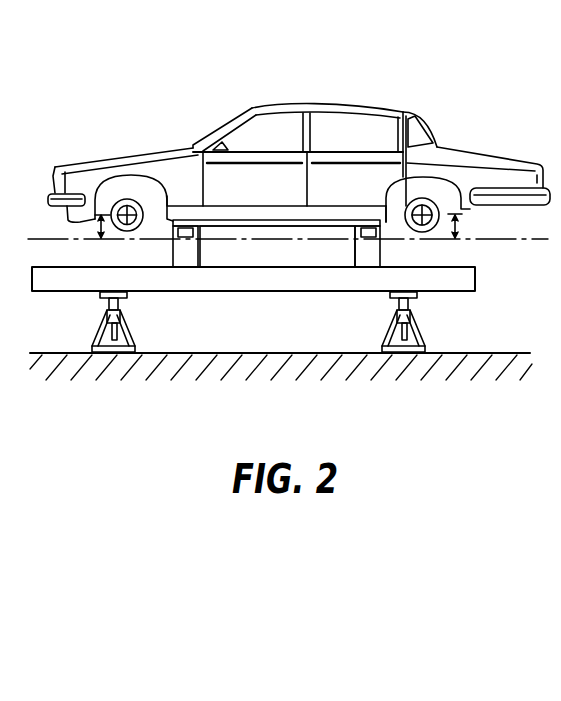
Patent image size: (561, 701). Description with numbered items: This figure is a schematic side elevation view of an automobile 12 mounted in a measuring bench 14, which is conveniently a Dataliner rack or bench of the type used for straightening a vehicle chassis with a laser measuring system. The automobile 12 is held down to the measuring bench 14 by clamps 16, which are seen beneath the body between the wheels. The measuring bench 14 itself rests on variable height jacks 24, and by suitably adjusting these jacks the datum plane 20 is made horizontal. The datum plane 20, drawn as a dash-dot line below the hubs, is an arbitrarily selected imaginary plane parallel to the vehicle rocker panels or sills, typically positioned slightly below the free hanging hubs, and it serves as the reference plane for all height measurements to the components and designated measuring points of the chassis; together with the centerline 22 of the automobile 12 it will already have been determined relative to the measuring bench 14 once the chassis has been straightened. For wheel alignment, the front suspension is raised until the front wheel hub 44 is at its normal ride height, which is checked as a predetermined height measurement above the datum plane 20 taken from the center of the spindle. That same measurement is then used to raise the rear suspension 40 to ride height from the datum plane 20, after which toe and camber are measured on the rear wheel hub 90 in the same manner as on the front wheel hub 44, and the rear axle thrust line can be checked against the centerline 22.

The automobile 12 is at (305, 102).
The measuring bench 14 is at (173, 292).
The clamps 16 is at (198, 227).
The datum plane 20 is at (537, 241).
The centerline 22 is at (42, 239).
The variable height jacks 24 is at (100, 328).
The rear suspension 40 is at (400, 220).
The front wheel hub 44 is at (134, 239).
The rear wheel hub 90 is at (436, 236).